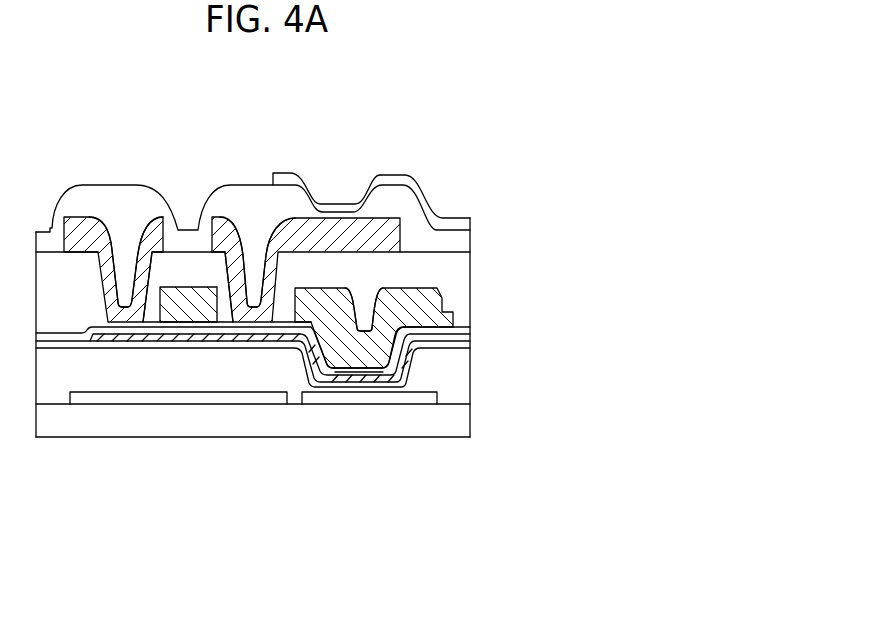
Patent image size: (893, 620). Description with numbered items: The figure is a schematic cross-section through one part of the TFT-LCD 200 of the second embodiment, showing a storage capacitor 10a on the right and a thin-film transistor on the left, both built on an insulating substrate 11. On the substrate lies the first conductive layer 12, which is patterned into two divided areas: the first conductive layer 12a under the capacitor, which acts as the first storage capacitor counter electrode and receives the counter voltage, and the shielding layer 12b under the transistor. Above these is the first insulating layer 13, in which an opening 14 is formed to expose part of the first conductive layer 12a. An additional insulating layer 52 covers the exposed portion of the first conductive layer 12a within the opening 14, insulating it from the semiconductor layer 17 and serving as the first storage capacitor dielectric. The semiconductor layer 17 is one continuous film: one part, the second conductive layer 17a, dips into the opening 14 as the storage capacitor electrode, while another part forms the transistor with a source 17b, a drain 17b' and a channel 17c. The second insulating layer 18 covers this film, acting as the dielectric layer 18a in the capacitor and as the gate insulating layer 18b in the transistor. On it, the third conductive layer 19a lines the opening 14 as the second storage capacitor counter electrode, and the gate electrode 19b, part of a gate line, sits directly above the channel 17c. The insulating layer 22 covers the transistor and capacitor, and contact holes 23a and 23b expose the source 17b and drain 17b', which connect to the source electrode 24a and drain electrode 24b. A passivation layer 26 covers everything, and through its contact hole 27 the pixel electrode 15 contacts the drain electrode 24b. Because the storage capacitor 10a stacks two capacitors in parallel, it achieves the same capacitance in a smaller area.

The TFT-LCD 200 is at (498, 105).
The storage capacitor 10a is at (444, 421).
The insulating substrate 11 is at (462, 420).
The first conductive layer 12 is at (239, 436).
The first conductive layer 12a is at (362, 398).
The shielding layer 12b is at (83, 397).
The first insulating layer 13 is at (462, 393).
The insulating layer 52 is at (462, 345).
The semiconductor layer 17 is at (280, 460).
The second conductive layer 17a is at (334, 378).
The source 17b is at (132, 435).
The channel 17c is at (173, 323).
The drain 17b' is at (258, 431).
The second insulating layer 18 is at (457, 333).
The dielectric layer 18a is at (378, 368).
The gate insulating layer 18b is at (192, 292).
The third conductive layer 19a is at (433, 312).
The gate electrode 19b is at (187, 292).
The opening 14 is at (372, 275).
The insulating layer 22 is at (462, 267).
The contact hole 23a is at (131, 219).
The contact hole 23b is at (256, 218).
The source electrode 24a is at (85, 236).
The drain electrode 24b is at (227, 240).
The passivation layer 26 is at (462, 240).
The contact hole 27 is at (342, 166).
The pixel electrode 15 is at (436, 207).